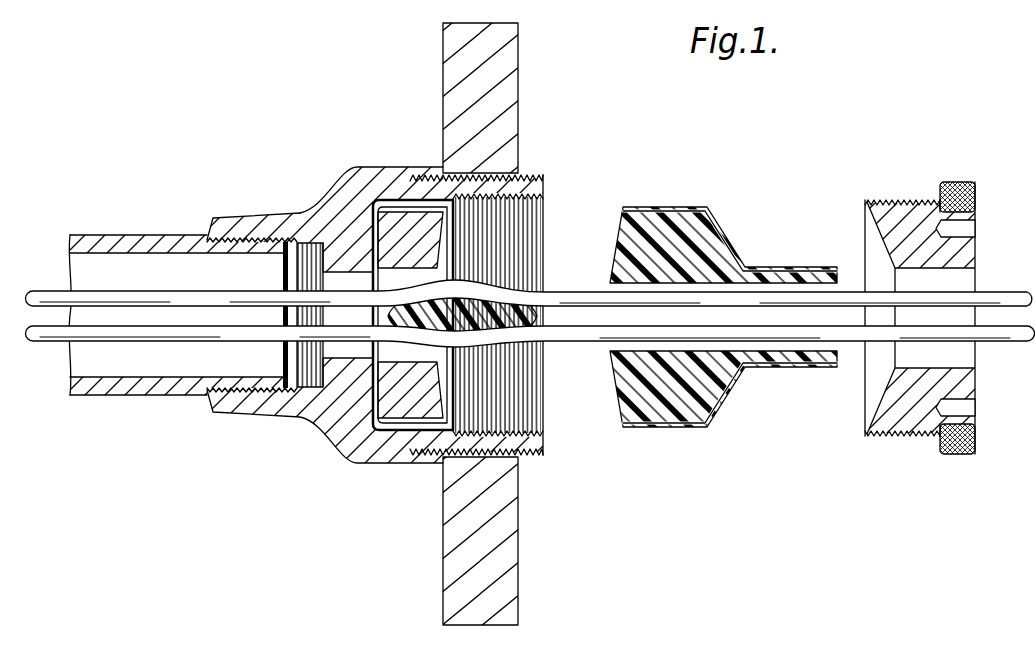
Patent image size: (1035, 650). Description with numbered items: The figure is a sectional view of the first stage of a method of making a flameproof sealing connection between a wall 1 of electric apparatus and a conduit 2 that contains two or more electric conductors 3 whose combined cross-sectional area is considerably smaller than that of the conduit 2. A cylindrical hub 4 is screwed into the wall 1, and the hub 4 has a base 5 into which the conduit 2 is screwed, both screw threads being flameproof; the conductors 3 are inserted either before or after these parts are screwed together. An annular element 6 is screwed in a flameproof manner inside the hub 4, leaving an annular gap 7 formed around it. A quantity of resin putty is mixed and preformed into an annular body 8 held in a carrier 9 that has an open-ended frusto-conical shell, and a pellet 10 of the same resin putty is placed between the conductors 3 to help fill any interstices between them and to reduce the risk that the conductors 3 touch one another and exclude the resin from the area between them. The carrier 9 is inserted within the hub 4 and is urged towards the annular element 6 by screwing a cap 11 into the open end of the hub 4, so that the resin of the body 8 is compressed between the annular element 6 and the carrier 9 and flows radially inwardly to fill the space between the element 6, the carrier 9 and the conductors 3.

The wall 1 is at (497, 73).
The conduit 2 is at (148, 240).
The electric conductors 3 is at (123, 333).
The cylindrical hub 4 is at (350, 186).
The base 5 is at (212, 226).
The annular element 6 is at (383, 400).
The annular gap 7 is at (412, 210).
The annular body 8 is at (622, 233).
The carrier 9 is at (685, 182).
The pellet 10 is at (513, 290).
The cap 11 is at (870, 210).